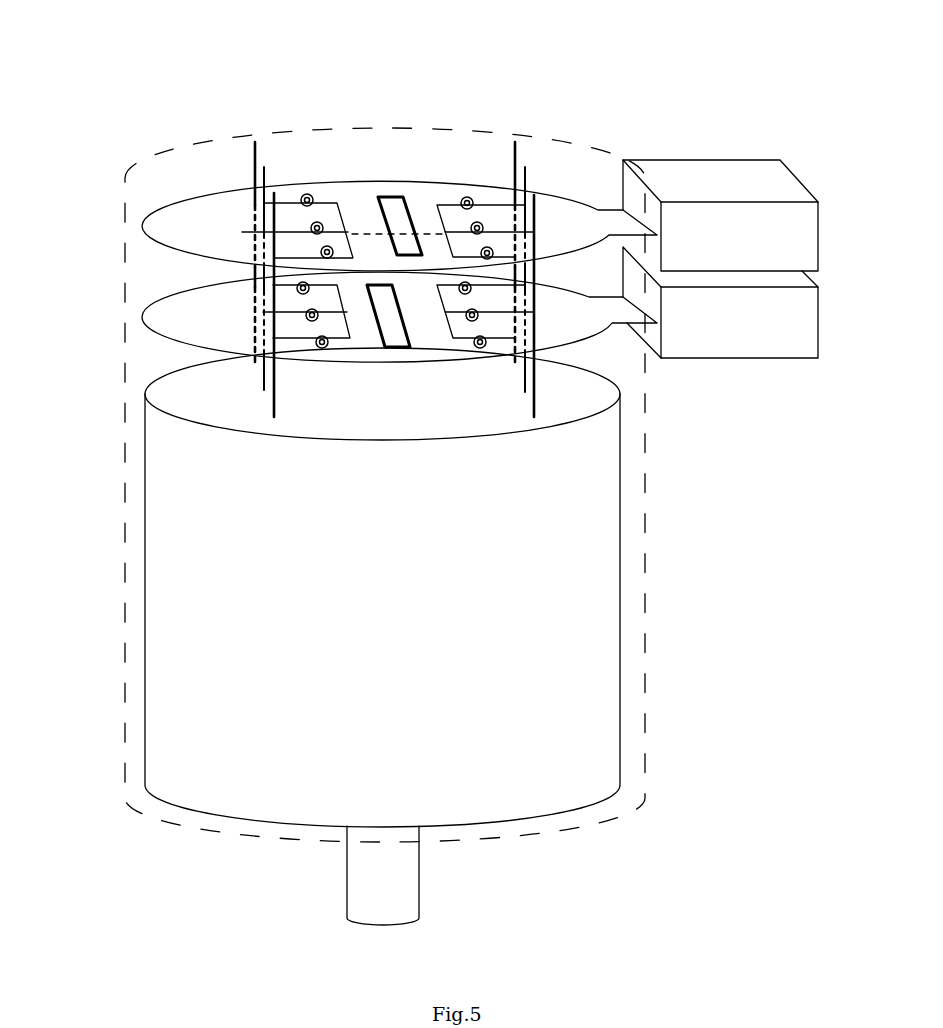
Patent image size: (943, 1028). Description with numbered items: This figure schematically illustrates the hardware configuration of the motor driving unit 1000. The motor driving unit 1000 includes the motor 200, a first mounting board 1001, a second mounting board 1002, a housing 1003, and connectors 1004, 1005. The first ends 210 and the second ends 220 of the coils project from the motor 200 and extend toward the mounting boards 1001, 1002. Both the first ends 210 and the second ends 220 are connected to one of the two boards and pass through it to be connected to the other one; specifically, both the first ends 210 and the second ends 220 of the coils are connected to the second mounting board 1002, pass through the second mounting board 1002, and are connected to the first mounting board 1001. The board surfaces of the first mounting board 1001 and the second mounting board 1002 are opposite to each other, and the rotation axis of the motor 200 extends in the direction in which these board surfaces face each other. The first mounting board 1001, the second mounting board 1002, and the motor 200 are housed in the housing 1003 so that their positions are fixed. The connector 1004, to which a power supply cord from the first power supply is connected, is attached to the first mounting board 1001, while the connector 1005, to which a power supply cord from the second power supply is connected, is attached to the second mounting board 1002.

The motor driving unit 1000 is at (300, 82).
The first mounting board 1001 is at (187, 208).
The second mounting board 1002 is at (170, 310).
The housing 1003 is at (437, 123).
The connector 1004 is at (720, 180).
The connector 1005 is at (705, 348).
The motor 200 is at (605, 663).
The first ends of the coils 210 is at (256, 187).
The second ends of the coils 220 is at (515, 185).